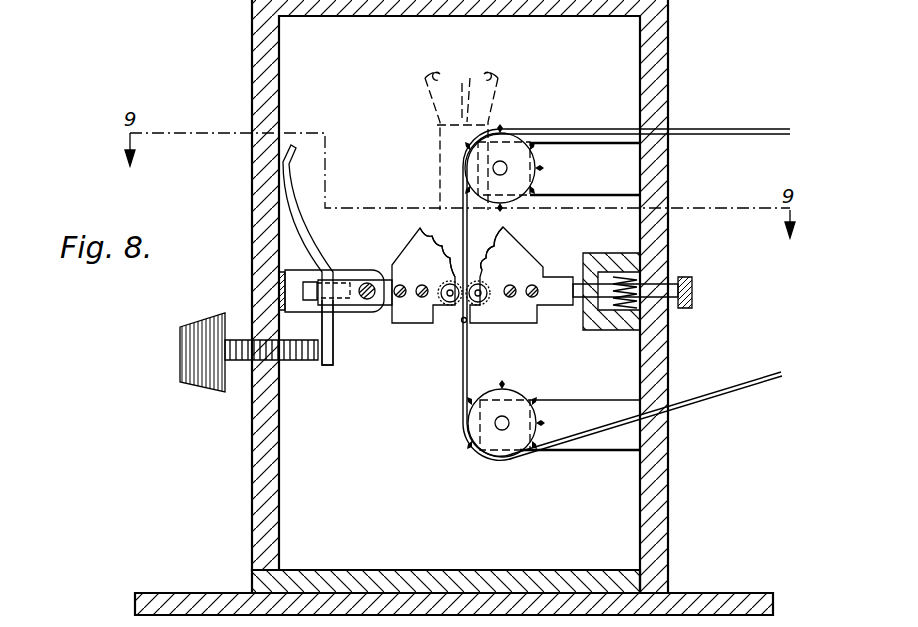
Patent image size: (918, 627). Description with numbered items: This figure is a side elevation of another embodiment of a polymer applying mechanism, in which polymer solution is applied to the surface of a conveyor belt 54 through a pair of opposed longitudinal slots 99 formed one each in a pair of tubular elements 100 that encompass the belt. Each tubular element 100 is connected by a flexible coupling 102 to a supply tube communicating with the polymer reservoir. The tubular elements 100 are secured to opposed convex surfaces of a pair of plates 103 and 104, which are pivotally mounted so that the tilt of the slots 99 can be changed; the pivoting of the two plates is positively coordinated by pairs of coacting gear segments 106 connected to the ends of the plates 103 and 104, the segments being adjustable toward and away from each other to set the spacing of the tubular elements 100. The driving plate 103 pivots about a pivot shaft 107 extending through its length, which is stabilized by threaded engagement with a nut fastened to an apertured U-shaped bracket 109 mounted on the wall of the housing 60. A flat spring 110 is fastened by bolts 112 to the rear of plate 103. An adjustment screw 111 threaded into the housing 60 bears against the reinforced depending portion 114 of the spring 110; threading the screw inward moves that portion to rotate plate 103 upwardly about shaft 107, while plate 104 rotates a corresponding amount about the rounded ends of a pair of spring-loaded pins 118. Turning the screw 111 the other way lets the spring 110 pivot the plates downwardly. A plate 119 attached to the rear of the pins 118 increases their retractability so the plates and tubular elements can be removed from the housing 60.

The conveyor belt 54 is at (733, 130).
The housing 60 is at (253, 506).
The longitudinal slots 99 is at (444, 285).
The tubular elements 100 is at (465, 316).
The flexible couplings 102 is at (486, 74).
The driving plate 103 is at (410, 310).
The plate 104 is at (528, 310).
The gear segments 106 is at (492, 240).
The pivot shaft 107 is at (367, 282).
The U-shaped bracket 109 is at (287, 268).
The flat spring 110 is at (297, 200).
The adjustment screw 111 is at (208, 383).
The bolts 112 is at (297, 290).
The reinforced depending portion 114 is at (334, 368).
The spring-loaded pins 118 is at (677, 280).
The plate 119 is at (697, 297).